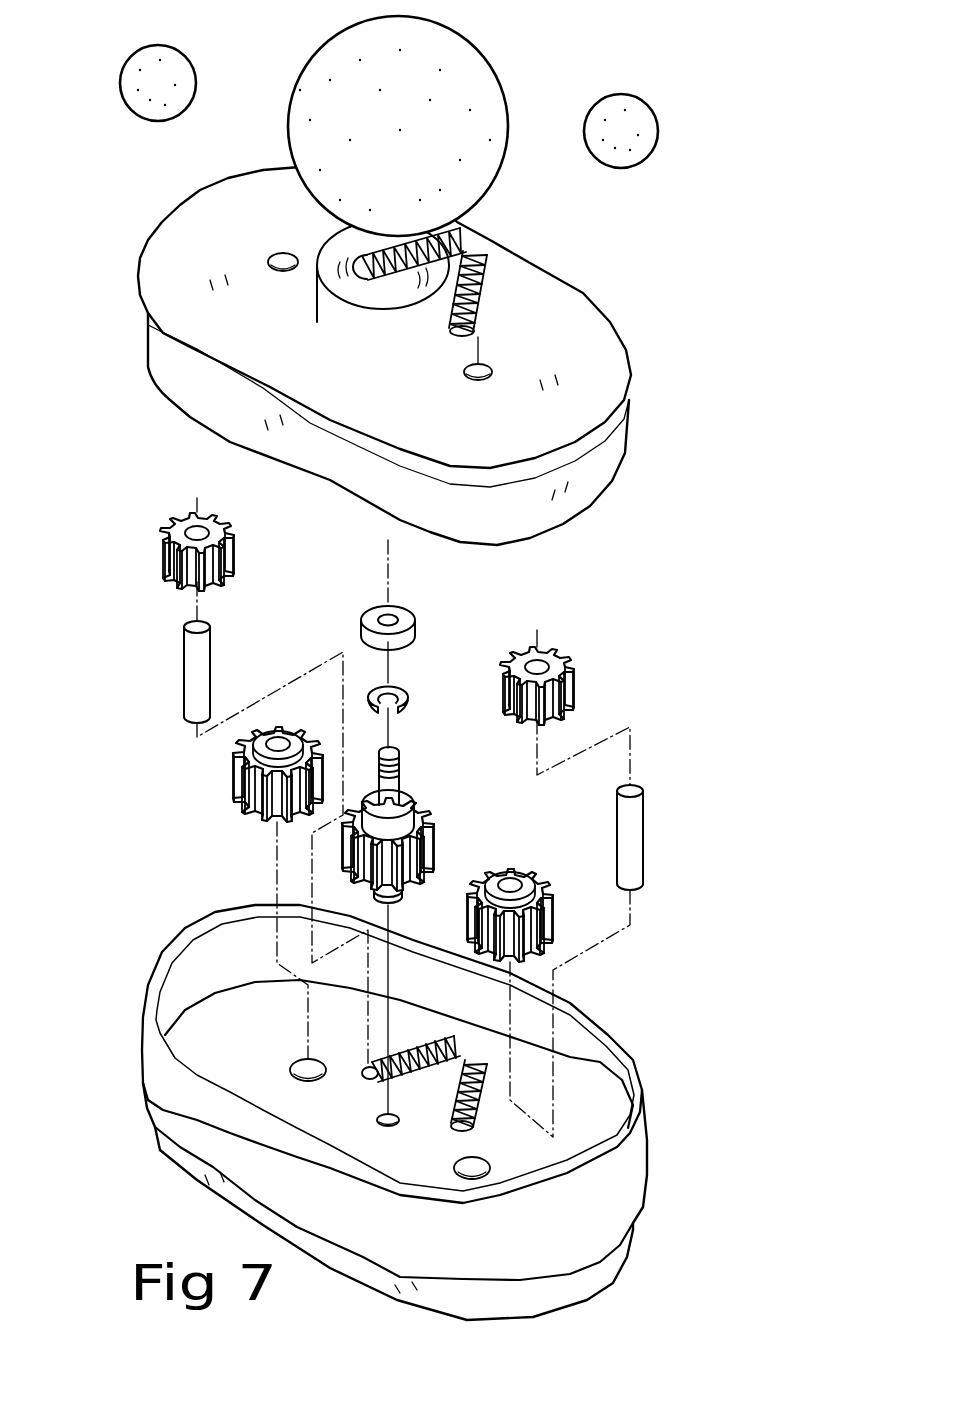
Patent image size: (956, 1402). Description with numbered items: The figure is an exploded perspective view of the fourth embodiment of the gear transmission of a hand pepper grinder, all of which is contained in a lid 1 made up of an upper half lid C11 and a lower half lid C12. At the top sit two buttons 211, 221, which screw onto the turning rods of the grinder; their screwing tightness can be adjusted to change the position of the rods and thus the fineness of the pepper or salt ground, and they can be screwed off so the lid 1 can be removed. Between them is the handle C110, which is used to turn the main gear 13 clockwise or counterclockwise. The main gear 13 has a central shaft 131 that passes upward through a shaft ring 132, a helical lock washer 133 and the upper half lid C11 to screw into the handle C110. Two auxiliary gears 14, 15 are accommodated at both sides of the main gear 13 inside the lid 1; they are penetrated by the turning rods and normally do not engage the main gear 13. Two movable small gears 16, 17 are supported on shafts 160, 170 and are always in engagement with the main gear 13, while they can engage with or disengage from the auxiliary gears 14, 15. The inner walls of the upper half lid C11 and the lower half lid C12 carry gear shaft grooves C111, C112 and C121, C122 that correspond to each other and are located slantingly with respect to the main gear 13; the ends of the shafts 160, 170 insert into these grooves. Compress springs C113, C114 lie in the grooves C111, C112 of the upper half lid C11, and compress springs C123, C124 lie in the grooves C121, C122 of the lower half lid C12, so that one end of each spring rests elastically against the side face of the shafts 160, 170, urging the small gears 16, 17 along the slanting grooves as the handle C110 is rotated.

The lid 1 is at (412, 665).
The upper half lid C11 is at (430, 356).
The handle C110 is at (487, 62).
The button 211 is at (283, 253).
The button 221 is at (483, 290).
The gear shaft groove C111 is at (363, 283).
The gear shaft groove C112 is at (458, 337).
The compress spring C113 is at (397, 283).
The compress spring C114 is at (480, 315).
The main gear 13 is at (422, 825).
The central shaft 131 is at (398, 790).
The shaft ring 132 is at (412, 617).
The helical lock washer 133 is at (410, 697).
The auxiliary gear 14 is at (292, 738).
The auxiliary gear 15 is at (533, 877).
The movable small gear 16 is at (170, 520).
The movable small gear 17 is at (555, 665).
The shaft 160 is at (187, 668).
The shaft 170 is at (635, 840).
The lower half lid C12 is at (441, 1112).
The gear shaft groove C121 is at (368, 1079).
The gear shaft groove C122 is at (455, 1130).
The compress spring C123 is at (410, 1057).
The compress spring C124 is at (483, 1090).